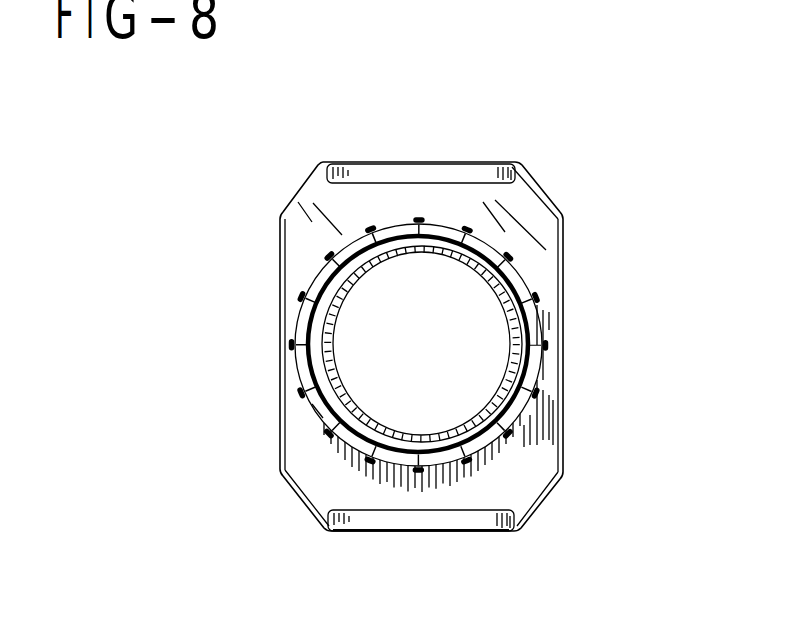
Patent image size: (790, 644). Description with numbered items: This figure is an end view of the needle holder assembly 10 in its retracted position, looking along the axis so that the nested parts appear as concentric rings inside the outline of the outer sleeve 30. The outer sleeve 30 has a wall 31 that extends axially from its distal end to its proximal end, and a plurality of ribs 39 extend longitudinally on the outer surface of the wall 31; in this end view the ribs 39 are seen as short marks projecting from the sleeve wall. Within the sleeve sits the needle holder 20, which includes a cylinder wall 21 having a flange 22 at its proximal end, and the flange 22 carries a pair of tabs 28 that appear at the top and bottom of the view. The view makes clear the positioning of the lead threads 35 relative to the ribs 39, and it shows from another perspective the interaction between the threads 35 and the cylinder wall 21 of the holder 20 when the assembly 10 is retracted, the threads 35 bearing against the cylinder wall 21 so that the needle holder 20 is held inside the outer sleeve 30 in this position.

The needle holder assembly 10 is at (224, 142).
The needle holder 20 is at (475, 142).
The flange 22 is at (548, 197).
The tabs 28 is at (415, 173).
The outer sleeve 30 is at (300, 268).
The cylinder wall 21 is at (317, 358).
The wall 31 is at (320, 412).
The lead threads 35 is at (503, 268).
The ribs 39 is at (503, 440).